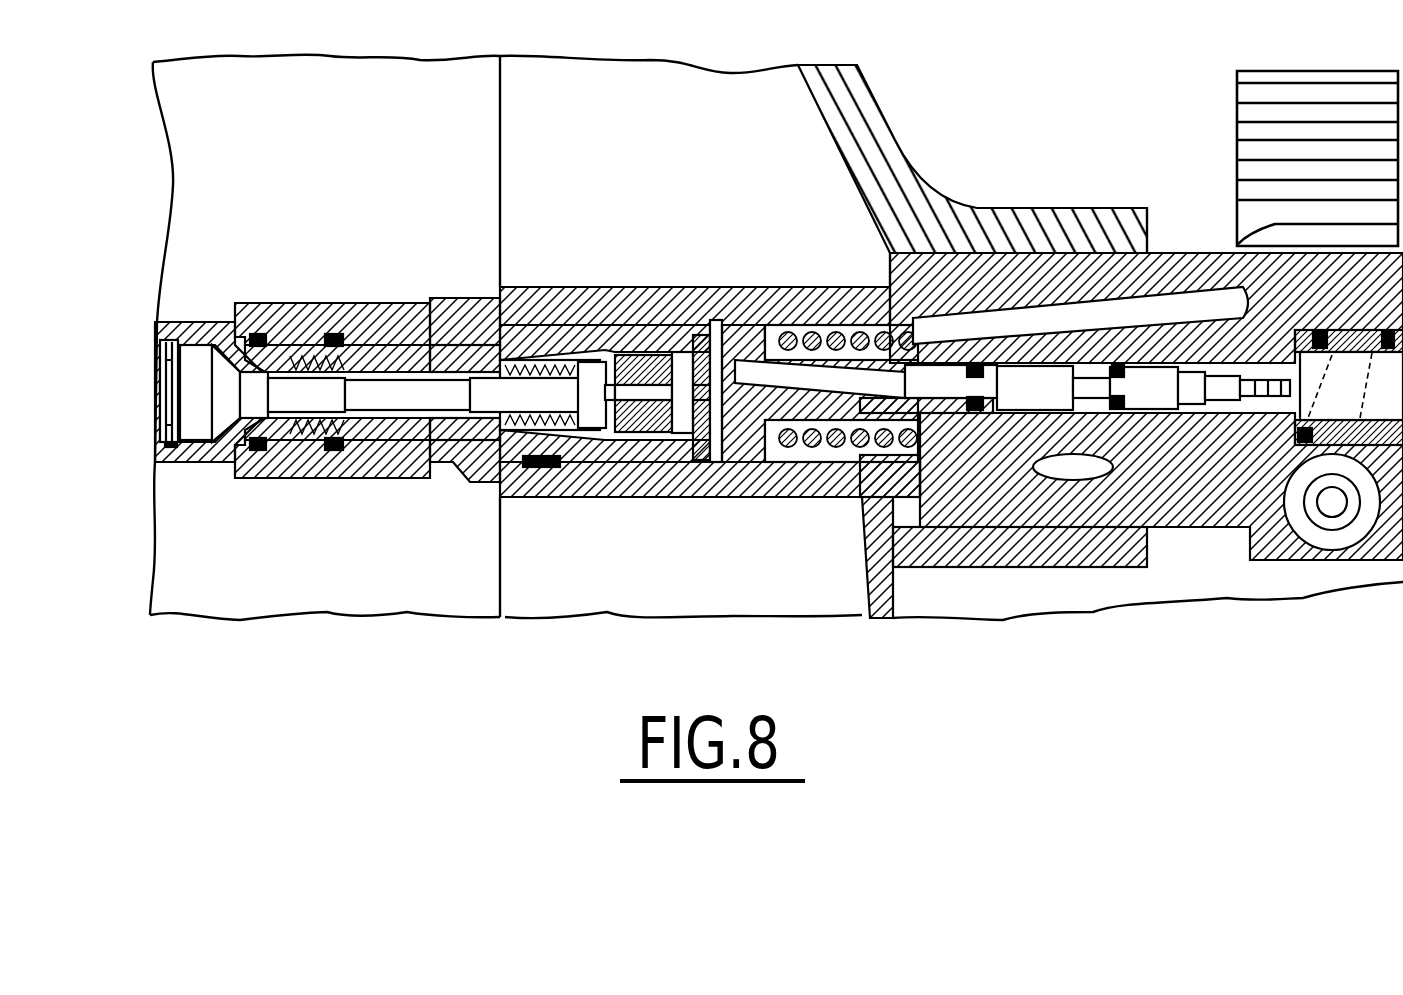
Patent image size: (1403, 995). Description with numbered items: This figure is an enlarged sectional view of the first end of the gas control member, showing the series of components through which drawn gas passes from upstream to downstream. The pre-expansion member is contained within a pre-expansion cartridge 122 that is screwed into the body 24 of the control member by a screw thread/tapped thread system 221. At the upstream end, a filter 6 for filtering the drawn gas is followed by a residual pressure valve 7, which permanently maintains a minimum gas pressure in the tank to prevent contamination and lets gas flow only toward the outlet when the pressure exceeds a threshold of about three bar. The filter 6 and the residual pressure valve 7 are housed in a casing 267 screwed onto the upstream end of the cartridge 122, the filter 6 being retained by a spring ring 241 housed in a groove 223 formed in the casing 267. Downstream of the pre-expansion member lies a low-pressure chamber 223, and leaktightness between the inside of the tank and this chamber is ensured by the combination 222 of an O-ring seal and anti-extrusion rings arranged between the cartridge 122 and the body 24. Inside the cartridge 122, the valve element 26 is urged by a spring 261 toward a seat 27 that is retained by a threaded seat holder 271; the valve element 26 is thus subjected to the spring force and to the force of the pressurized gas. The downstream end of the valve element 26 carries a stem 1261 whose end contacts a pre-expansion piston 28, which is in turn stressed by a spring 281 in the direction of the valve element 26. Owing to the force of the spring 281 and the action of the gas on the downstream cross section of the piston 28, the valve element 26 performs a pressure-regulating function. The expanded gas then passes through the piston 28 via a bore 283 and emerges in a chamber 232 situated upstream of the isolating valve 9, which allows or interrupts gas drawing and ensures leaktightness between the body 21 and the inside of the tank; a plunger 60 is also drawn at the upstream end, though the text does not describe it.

The filter 6 is at (194, 316).
The residual pressure valve 7 is at (326, 296).
The isolating valve 9 is at (1143, 390).
The body 21 is at (1215, 490).
The body 24 is at (856, 462).
The valve element 26 is at (610, 318).
The seat 27 is at (647, 312).
The pre-expansion piston 28 is at (868, 335).
The actuating plunger 60 is at (140, 380).
The pre-expansion cartridge 122 is at (470, 482).
The screw thread/tapped thread system 221 is at (625, 497).
The combination of an O-ring seal and anti-extrusion rings 222 is at (536, 468).
The low-pressure chamber 223 is at (714, 497).
The chamber 232 is at (1022, 383).
The spring ring 241 is at (172, 463).
The spring 261 is at (546, 318).
The casing 267 is at (335, 480).
The threaded seat holder 271 is at (683, 312).
The spring 281 is at (788, 497).
The bore 283 is at (955, 430).
The stem 1261 is at (722, 330).